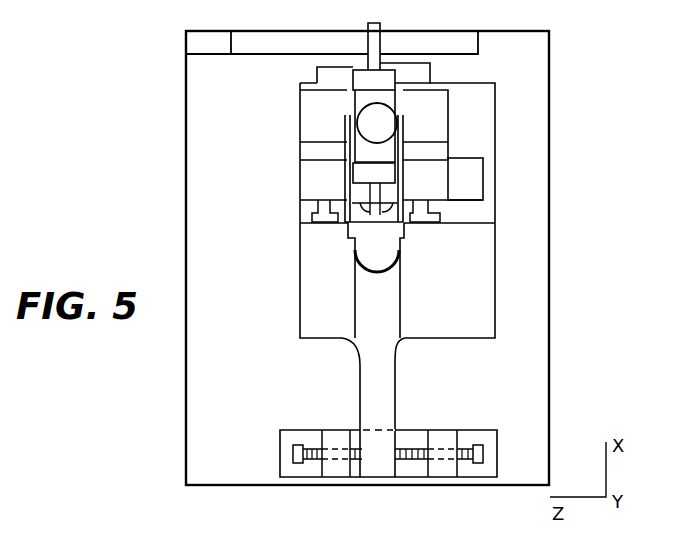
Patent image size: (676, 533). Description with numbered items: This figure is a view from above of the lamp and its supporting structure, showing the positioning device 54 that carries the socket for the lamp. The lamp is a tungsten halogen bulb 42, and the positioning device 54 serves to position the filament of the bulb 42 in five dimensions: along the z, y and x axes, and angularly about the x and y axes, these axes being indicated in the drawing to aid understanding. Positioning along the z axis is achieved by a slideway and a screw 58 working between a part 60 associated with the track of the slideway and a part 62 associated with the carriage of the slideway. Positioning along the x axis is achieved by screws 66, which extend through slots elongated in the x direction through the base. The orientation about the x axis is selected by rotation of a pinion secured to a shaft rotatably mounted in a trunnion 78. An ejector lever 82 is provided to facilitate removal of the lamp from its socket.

The tungsten halogen bulb 42 is at (368, 126).
The positioning device 54 is at (262, 246).
The screw 58 is at (413, 440).
The part 60 is at (450, 437).
The part 62 is at (393, 387).
The screws 66 is at (313, 207).
The trunnion 78 is at (420, 78).
The ejector lever 82 is at (375, 248).